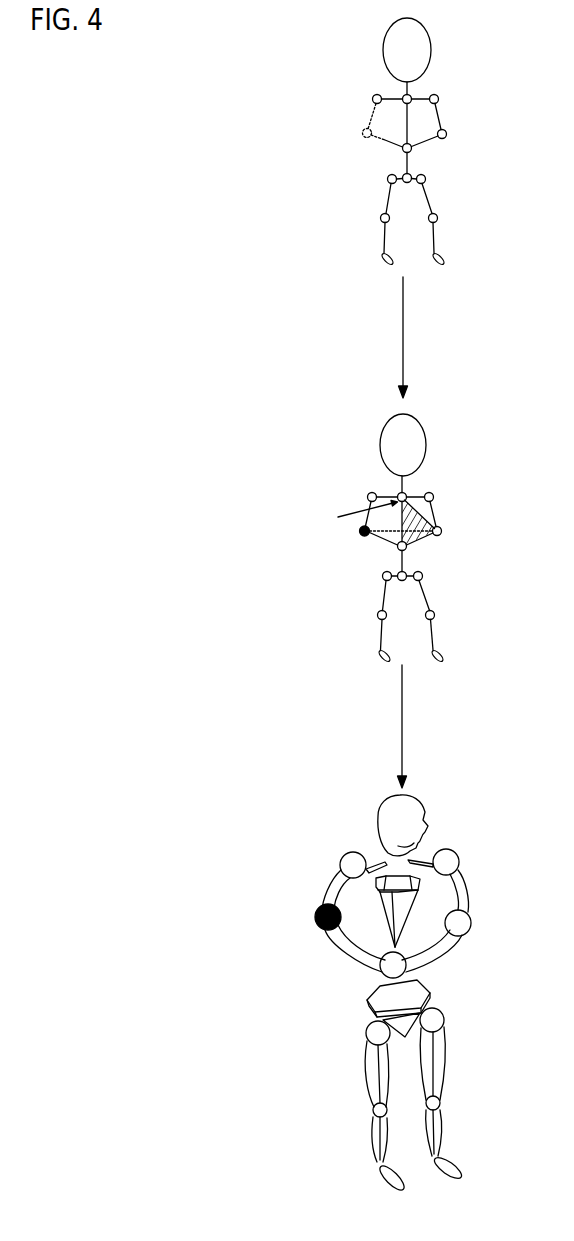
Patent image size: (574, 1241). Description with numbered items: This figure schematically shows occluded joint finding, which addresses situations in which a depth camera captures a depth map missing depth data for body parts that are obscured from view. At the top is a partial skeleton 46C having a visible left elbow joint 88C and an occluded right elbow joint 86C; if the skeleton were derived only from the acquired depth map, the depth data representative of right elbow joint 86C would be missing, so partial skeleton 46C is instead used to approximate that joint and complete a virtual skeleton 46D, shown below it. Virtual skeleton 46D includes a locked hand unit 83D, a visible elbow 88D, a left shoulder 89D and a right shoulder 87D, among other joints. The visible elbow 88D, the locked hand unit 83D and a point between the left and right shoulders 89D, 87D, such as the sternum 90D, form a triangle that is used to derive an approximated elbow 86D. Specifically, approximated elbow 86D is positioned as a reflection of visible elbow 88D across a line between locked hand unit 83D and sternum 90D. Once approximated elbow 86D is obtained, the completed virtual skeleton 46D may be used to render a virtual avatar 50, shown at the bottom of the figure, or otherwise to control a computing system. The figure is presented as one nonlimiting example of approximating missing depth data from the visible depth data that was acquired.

The partial skeleton 46C is at (424, 61).
The occluded right elbow joint 86C is at (360, 135).
The visible left elbow joint 88C is at (447, 130).
The virtual skeleton 46D is at (420, 457).
The right shoulder 87D is at (369, 492).
The left shoulder 89D is at (433, 493).
The sternum 90D is at (352, 515).
The visible elbow 88D is at (442, 529).
The approximated elbow 86D is at (360, 533).
The locked hand unit 83D is at (407, 546).
The virtual avatar 50 is at (412, 833).